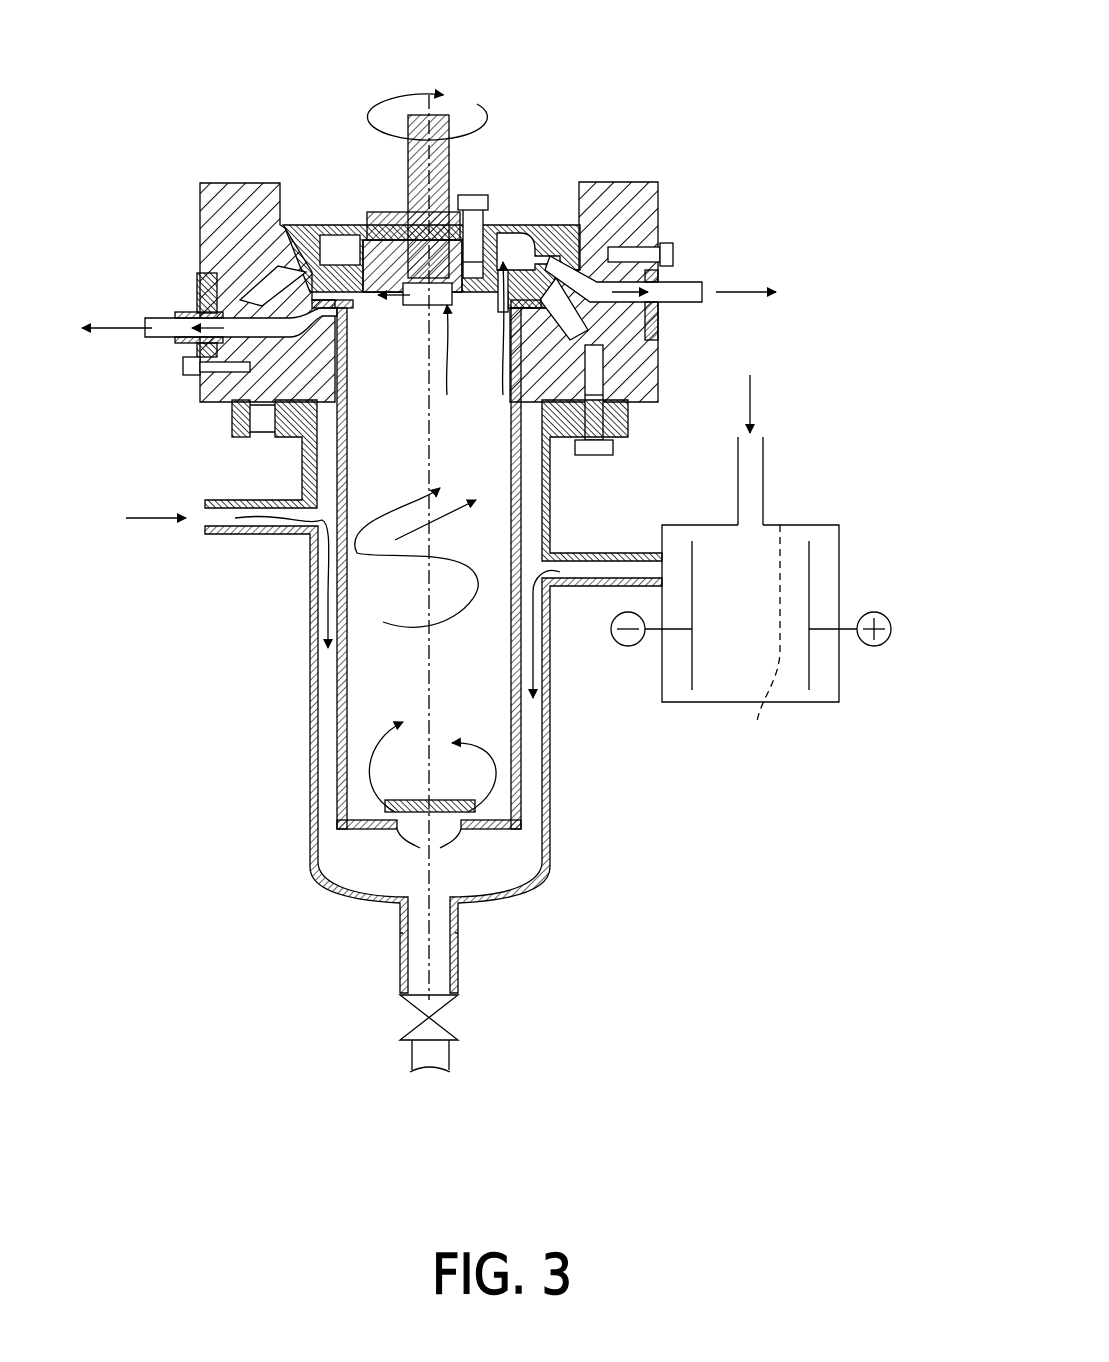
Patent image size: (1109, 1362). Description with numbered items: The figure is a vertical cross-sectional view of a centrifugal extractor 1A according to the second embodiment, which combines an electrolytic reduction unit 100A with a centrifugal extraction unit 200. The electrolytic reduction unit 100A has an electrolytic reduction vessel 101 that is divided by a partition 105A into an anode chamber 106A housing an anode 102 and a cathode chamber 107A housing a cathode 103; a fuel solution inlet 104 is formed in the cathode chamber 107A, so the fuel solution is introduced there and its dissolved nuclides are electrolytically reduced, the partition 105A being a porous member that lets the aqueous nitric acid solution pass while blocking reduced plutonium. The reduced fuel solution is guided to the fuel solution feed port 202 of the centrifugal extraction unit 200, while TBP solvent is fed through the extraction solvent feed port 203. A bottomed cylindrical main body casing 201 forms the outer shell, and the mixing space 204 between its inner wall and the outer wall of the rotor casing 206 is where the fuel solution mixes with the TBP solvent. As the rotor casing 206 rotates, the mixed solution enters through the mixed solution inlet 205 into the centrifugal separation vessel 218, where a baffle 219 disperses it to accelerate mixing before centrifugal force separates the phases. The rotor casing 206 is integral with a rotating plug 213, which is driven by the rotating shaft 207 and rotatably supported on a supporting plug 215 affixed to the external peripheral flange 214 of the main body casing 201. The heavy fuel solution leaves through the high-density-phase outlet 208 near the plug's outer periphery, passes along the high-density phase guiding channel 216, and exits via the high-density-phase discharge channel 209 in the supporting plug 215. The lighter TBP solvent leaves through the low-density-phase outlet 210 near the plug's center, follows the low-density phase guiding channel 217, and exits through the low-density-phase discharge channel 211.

The centrifugal extractor 1A is at (770, 48).
The centrifugal extraction unit 200 is at (576, 126).
The electrolytic reduction unit 100A is at (710, 800).
The electrolytic reduction vessel 101 is at (808, 525).
The anode 102 is at (848, 648).
The cathode 103 is at (652, 648).
The fuel solution inlet 104 is at (762, 436).
The partition 105A is at (757, 658).
The anode chamber 106A is at (795, 700).
The cathode chamber 107A is at (710, 700).
The main body casing 201 is at (310, 694).
The fuel solution feed port 202 is at (600, 588).
The extraction solvent feed port 203 is at (208, 533).
The mixing space 204 is at (328, 796).
The mixed solution inlet 205 is at (456, 816).
The rotor casing 206 is at (340, 752).
The rotating shaft 207 is at (408, 152).
The high-density-phase outlet 208 is at (500, 305).
The high-density-phase discharge channel 209 is at (704, 290).
The low-density-phase outlet 210 is at (432, 305).
The low-density-phase discharge channel 211 is at (150, 336).
The rotating plug 213 is at (480, 226).
The external peripheral flange 214 is at (240, 413).
The supporting plug 215 is at (660, 195).
The high-density phase guiding channel 216 is at (520, 240).
The low-density phase guiding channel 217 is at (340, 250).
The centrifugal separation vessel 218 is at (385, 662).
The baffle 219 is at (396, 800).